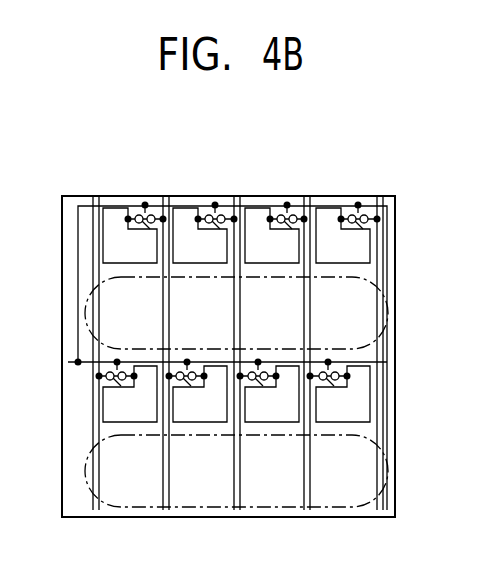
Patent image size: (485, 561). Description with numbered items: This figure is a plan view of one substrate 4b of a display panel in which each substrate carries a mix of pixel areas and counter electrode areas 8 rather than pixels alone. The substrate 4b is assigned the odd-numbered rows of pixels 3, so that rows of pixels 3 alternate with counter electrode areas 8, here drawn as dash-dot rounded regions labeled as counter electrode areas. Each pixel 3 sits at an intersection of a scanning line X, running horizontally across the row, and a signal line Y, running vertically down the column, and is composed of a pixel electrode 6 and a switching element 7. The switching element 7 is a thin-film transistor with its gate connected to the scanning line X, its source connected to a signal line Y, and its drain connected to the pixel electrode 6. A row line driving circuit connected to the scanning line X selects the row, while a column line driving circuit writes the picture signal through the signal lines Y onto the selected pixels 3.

The pixel 3 is at (92, 244).
The substrate 4b is at (347, 196).
The pixel electrode 6 is at (110, 228).
The switching element 7 is at (141, 205).
The counter electrode area 8 is at (400, 310).
The scanning line X is at (388, 363).
The signal line Y is at (101, 206).